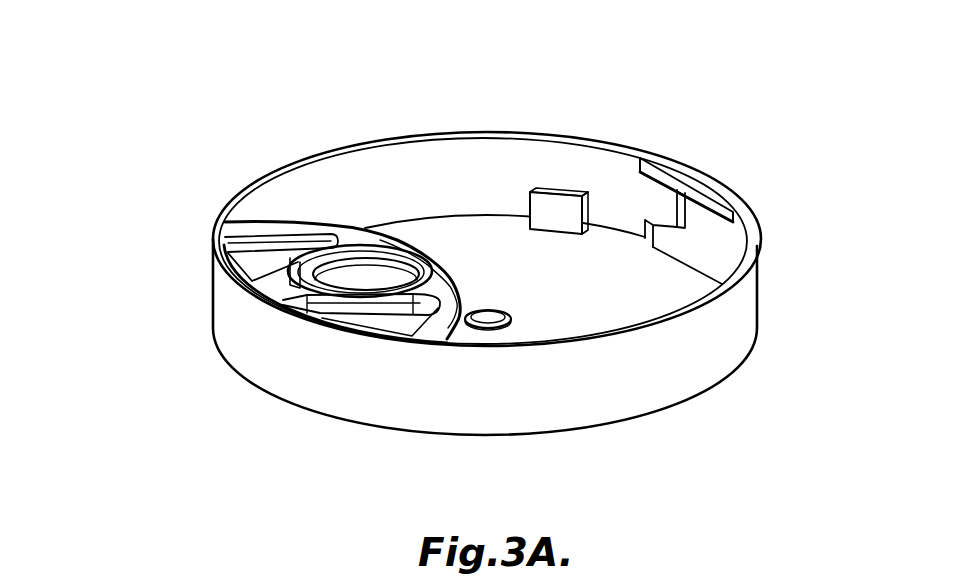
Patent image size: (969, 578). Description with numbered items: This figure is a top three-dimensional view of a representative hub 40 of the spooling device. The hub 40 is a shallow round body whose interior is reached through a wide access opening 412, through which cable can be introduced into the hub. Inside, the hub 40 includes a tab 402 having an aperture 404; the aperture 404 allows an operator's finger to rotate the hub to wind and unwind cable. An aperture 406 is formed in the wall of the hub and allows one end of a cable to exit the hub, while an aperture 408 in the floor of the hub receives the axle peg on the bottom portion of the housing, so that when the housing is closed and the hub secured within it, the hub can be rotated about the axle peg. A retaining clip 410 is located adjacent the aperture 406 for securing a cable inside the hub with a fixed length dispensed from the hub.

The hub 40 is at (178, 343).
The tab 402 is at (432, 332).
The aperture 404 is at (364, 286).
The aperture 406 is at (709, 247).
The aperture 408 is at (495, 336).
The retaining clip 410 is at (571, 207).
The wide access opening 412 is at (600, 308).